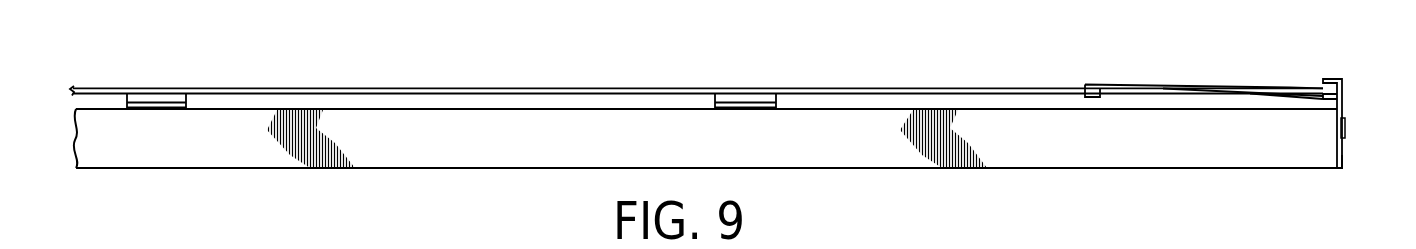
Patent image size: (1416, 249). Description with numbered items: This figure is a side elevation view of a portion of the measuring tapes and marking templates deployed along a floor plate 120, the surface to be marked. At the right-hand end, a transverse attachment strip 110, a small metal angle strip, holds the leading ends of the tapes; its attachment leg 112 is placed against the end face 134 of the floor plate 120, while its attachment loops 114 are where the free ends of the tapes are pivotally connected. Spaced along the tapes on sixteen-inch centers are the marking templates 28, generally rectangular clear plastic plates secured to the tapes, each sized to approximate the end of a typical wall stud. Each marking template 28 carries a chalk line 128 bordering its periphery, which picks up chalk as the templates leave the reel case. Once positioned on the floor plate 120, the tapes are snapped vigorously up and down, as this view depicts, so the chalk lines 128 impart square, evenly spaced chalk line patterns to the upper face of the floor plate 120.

The marking template 28 is at (790, 100).
The chalk line 128 is at (763, 107).
The floor plate 120 is at (1110, 145).
The attachment loops 114 is at (1320, 82).
The attachment strip 110 is at (1355, 63).
The attachment leg 112 is at (1344, 116).
The end face 134 is at (1343, 158).